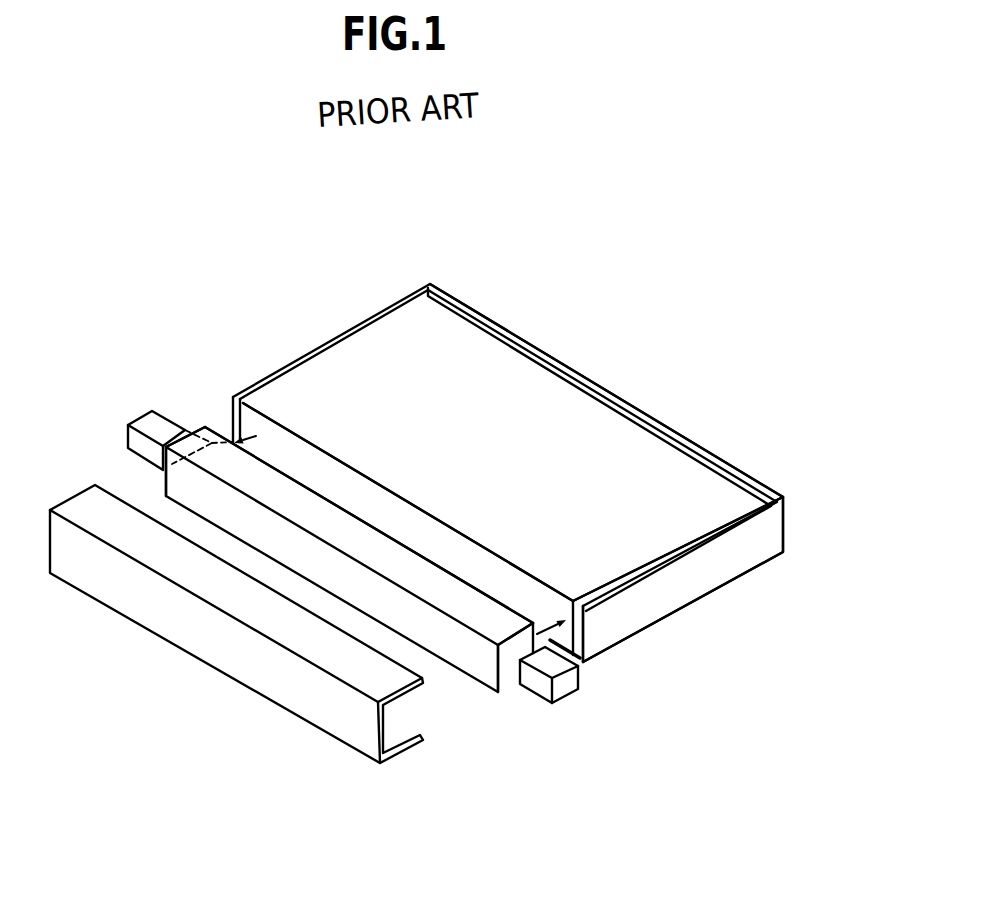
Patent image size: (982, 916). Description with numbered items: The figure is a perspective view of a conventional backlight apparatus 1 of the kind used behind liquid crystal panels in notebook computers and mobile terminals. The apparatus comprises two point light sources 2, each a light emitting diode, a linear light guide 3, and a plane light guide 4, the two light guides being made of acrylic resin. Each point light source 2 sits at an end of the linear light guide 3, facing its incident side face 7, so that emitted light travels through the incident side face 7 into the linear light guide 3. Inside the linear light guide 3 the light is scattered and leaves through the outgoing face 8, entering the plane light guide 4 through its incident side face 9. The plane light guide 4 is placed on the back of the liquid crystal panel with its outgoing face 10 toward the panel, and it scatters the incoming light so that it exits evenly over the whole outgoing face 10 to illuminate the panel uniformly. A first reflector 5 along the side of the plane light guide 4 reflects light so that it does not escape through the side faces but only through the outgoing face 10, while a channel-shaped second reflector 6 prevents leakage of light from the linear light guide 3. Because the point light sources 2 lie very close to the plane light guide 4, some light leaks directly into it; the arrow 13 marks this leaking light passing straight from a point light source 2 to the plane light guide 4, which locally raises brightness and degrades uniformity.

The backlight apparatus 1 is at (647, 254).
The point light source 2 is at (143, 425).
The linear light guide 3 is at (387, 553).
The plane light guide 4 is at (557, 403).
The first reflector 5 is at (738, 552).
The second reflector 6 is at (313, 707).
The incident side face 7 is at (197, 433).
The outgoing face 8 is at (307, 487).
The incident side face 9 is at (505, 580).
The outgoing face 10 is at (647, 458).
The arrow 13 is at (211, 443).